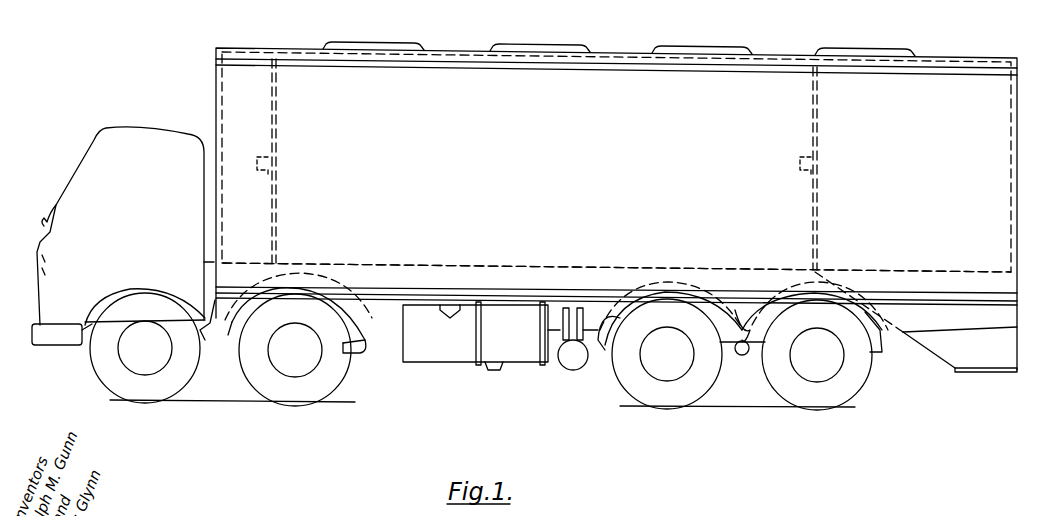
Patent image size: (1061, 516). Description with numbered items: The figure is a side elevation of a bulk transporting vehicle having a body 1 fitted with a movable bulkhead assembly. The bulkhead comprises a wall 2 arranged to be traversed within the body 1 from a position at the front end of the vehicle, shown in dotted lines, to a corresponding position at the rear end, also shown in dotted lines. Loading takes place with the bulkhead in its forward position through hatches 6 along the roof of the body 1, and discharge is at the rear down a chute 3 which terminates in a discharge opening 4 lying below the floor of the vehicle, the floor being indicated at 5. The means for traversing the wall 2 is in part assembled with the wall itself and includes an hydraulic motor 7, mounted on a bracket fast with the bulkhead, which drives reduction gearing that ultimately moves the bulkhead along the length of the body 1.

The body 1 is at (214, 93).
The wall 2 is at (275, 121).
The chute 3 is at (925, 348).
The discharge opening 4 is at (972, 374).
The floor 5 is at (620, 265).
The hatches 6 is at (512, 46).
The hydraulic motor 7 is at (264, 178).